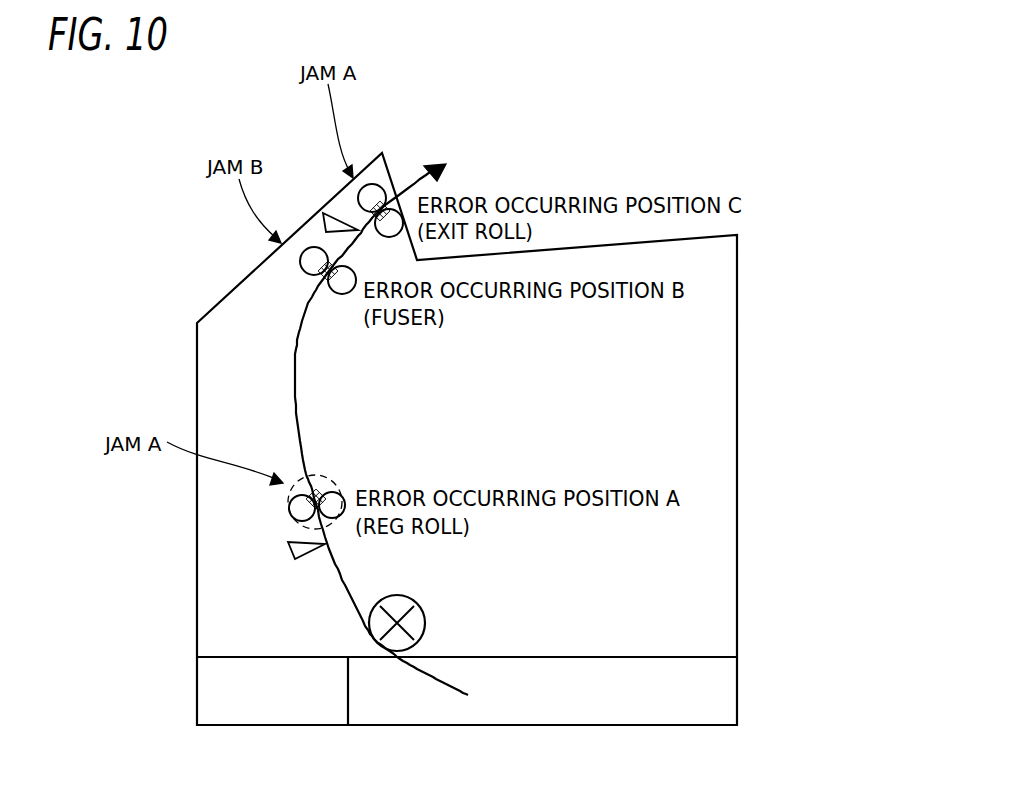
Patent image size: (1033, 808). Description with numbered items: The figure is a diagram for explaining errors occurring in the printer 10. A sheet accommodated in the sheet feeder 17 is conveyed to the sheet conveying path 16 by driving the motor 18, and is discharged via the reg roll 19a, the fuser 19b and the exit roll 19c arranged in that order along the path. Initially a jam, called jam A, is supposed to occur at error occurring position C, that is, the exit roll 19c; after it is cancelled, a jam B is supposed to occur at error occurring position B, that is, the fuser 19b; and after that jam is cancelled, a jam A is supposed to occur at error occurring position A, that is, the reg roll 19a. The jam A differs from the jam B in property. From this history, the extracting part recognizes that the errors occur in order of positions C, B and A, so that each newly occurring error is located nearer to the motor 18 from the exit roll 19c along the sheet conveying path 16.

The printer 10 is at (737, 487).
The sheet conveying path 16 is at (336, 565).
The sheet feeder 17 is at (587, 713).
The motor 18 is at (417, 603).
The reg roll 19a is at (290, 517).
The fuser 19b is at (312, 247).
The exit roll 19c is at (375, 184).